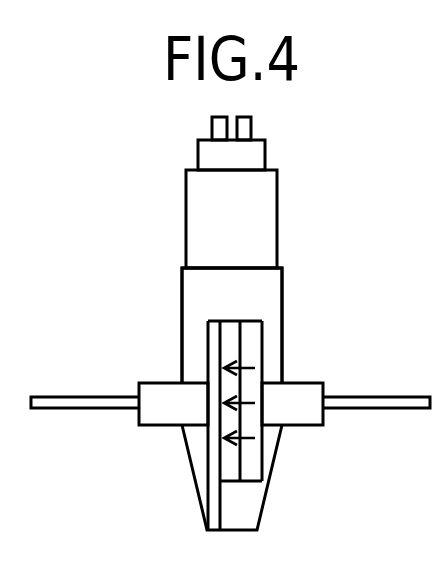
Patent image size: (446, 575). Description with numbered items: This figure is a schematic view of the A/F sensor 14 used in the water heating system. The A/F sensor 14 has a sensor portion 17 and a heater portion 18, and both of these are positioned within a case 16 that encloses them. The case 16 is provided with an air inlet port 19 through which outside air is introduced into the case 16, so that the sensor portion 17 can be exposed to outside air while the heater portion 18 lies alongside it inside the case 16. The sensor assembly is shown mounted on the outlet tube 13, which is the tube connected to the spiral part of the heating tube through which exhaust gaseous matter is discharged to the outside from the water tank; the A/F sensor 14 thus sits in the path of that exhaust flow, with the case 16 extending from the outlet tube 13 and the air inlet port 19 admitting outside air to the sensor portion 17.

The outlet tube 13 is at (387, 408).
The A/F sensor 14 is at (182, 292).
The case 16 is at (282, 362).
The sensor portion 17 is at (228, 320).
The heater portion 18 is at (264, 334).
The air inlet port 19 is at (208, 343).